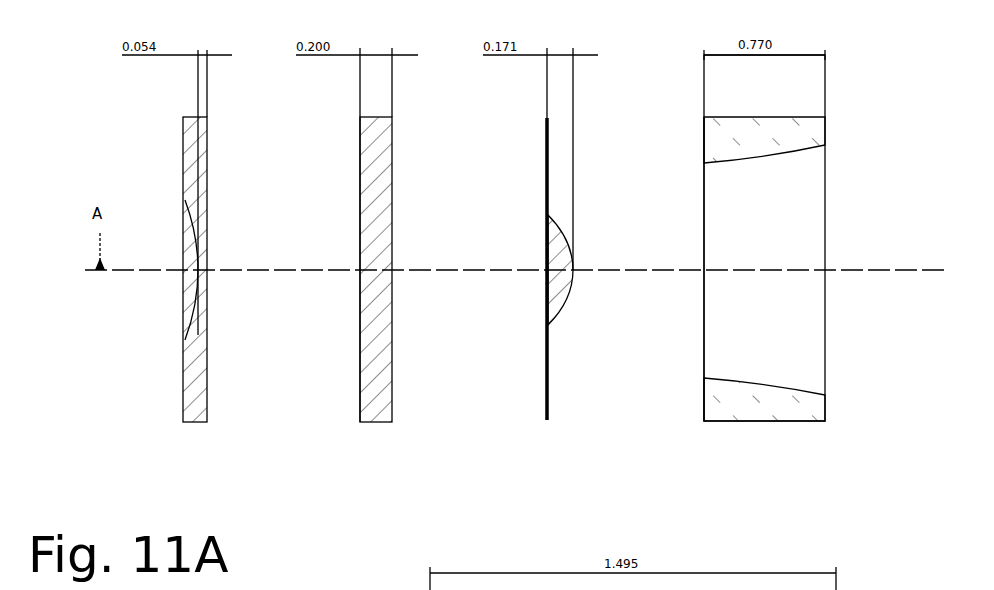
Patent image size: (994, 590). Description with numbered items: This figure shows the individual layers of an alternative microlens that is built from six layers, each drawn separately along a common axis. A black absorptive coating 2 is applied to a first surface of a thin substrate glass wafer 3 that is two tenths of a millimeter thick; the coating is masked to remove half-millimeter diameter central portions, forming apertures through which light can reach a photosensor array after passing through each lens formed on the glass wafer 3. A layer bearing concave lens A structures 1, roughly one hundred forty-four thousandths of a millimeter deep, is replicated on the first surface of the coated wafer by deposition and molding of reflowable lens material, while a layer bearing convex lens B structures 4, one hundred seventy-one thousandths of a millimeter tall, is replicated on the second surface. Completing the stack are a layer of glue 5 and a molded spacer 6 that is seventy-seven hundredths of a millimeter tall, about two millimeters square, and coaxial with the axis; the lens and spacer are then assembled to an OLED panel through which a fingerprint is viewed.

The concave lens A structures 1 is at (194, 422).
The black absorptive coating 2 is at (362, 335).
The thin substrate glass wafer 3 is at (377, 422).
The convex lens B structures 4 is at (547, 420).
The layer of glue 5 is at (704, 400).
The molded spacer 6 is at (767, 421).